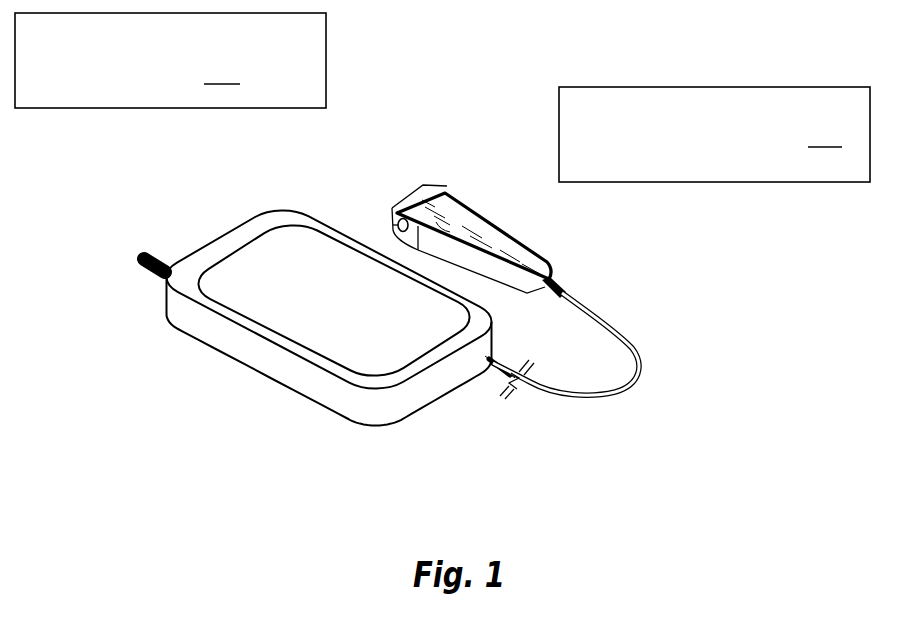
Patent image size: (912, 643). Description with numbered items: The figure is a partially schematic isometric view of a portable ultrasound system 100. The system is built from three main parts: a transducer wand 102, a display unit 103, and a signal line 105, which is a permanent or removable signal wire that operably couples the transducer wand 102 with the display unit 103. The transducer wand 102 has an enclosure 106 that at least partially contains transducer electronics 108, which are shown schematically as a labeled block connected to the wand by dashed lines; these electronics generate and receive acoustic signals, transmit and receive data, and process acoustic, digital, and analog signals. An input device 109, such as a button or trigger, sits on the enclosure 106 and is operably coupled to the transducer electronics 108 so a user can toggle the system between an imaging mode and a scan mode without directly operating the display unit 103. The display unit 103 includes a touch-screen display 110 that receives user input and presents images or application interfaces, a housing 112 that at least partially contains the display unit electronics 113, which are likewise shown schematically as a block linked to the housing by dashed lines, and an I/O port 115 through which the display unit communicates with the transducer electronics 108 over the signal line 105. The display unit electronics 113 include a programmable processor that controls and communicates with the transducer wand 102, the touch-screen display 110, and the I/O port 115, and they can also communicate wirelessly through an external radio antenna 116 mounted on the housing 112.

The portable ultrasound system 100 is at (401, 88).
The transducer wand 102 is at (600, 255).
The display unit 103 is at (137, 315).
The signal line 105 is at (630, 379).
The enclosure 106 is at (444, 190).
The transducer electronics 108 is at (870, 182).
The input device 109 is at (398, 219).
The touch-screen display 110 is at (230, 294).
The housing 112 is at (302, 384).
The display unit electronics 113 is at (17, 108).
The I/O port 115 is at (490, 366).
The external radio antenna 116 is at (145, 270).